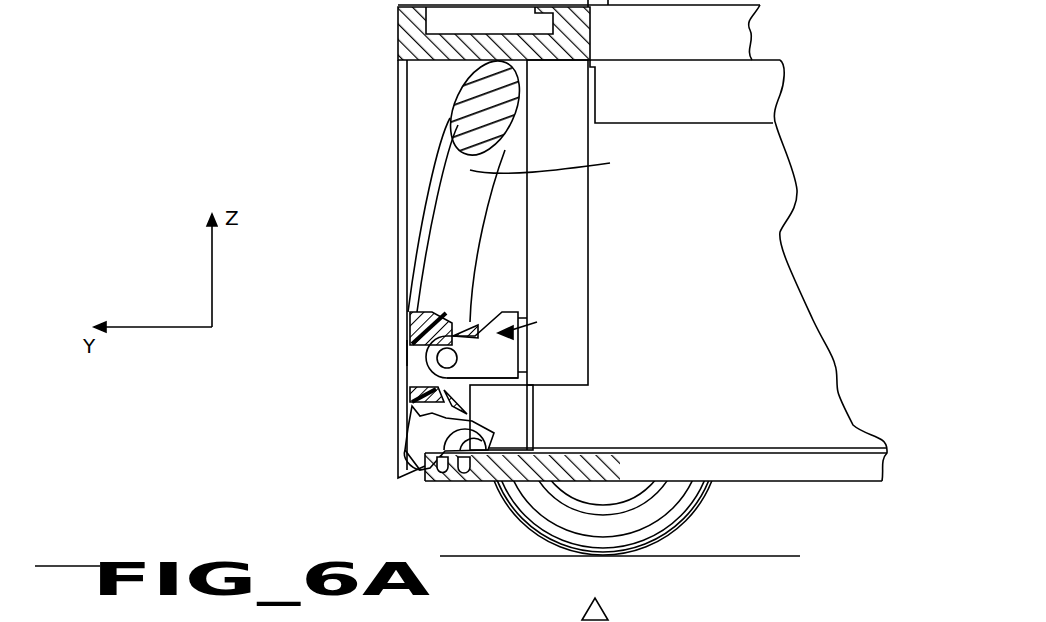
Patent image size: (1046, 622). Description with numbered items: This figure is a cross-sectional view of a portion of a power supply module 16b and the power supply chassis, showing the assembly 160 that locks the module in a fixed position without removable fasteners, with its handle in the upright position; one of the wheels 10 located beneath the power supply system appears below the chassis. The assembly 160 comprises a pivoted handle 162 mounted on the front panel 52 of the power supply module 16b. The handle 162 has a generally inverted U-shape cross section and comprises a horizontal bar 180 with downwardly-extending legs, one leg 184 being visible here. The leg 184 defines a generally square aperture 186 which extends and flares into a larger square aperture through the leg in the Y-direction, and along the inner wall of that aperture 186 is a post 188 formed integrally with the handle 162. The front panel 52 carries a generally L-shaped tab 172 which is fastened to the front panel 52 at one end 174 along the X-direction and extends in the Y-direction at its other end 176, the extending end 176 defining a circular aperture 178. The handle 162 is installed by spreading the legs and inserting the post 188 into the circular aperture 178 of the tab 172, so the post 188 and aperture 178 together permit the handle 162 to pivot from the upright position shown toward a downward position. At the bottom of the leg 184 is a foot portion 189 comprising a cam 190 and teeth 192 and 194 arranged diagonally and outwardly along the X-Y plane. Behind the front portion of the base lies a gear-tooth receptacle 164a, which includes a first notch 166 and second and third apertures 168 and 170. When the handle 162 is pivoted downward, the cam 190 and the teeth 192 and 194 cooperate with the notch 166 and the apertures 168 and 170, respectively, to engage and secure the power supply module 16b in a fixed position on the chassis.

The wheels 10 is at (688, 505).
The power supply module 16b is at (722, 176).
The front panel 52 is at (530, 212).
The assembly 160 is at (324, 99).
The pivoted handle 162 is at (418, 200).
The gear-tooth receptacle 164a is at (387, 428).
The first notch 166 is at (420, 480).
The second aperture 168 is at (445, 482).
The third aperture 170 is at (470, 482).
The L-shaped tab 172 is at (537, 322).
The one end of the tab 174 is at (521, 360).
The extending end of the tab 176 is at (500, 363).
The circular aperture 178 is at (437, 359).
The horizontal bar 180 is at (457, 103).
The leg 184 is at (586, 162).
The square aperture 186 is at (415, 352).
The post 188 is at (445, 302).
The foot portion 189 is at (415, 442).
The cam 190 is at (400, 463).
The tooth 192 is at (488, 424).
The tooth 194 is at (490, 437).